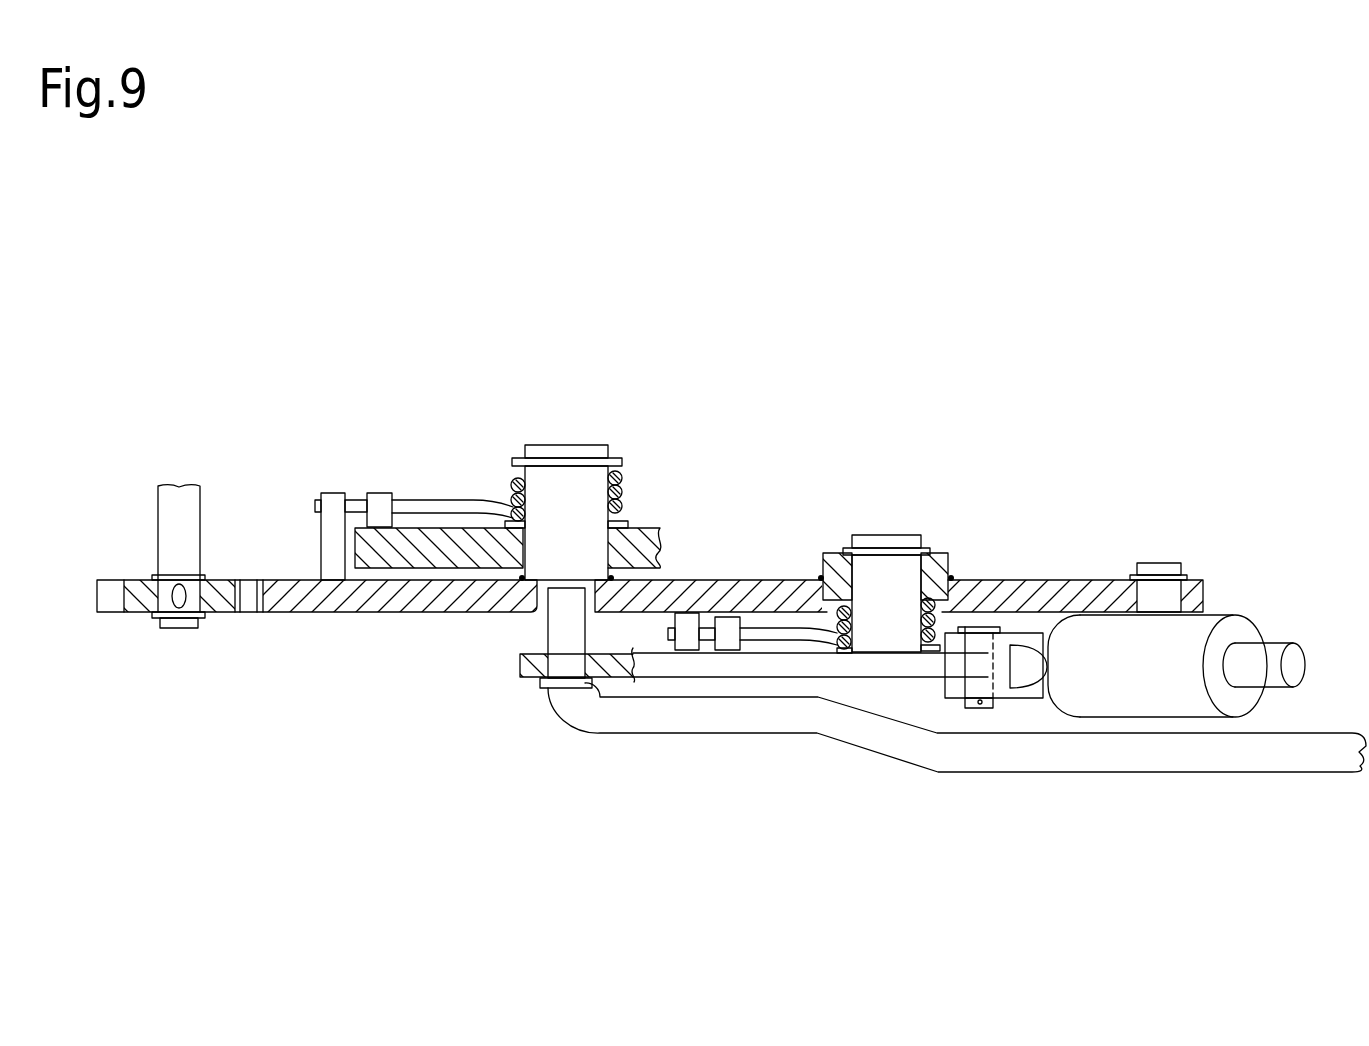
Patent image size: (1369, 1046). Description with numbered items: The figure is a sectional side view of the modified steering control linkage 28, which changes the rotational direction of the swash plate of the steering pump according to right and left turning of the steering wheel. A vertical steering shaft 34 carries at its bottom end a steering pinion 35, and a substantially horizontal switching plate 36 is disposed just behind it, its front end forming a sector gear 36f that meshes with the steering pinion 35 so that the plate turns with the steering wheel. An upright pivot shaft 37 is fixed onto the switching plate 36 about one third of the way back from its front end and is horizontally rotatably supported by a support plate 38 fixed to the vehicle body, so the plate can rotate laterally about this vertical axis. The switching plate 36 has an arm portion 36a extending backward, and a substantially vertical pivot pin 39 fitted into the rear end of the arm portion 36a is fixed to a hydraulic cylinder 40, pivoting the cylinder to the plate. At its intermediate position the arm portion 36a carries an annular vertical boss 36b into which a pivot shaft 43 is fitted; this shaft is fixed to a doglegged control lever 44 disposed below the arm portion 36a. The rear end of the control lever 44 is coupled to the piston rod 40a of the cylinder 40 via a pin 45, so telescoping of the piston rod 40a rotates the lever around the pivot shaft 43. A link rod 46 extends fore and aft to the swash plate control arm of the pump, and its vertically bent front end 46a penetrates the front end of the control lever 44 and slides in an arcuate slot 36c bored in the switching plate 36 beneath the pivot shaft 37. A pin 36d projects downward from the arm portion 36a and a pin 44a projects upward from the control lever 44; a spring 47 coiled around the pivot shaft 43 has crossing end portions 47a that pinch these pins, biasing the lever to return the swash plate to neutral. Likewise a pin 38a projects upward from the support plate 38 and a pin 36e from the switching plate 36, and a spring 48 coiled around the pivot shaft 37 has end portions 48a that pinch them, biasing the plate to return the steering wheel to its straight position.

The steering control linkage 28 is at (388, 283).
The steering shaft 34 is at (165, 503).
The steering pinion 35 is at (140, 614).
The switching plate 36 is at (300, 613).
The arm portion 36a is at (1028, 578).
The boss 36b is at (935, 568).
The arcuate slot 36c is at (545, 620).
The pin 36d is at (688, 642).
The pin 36e is at (332, 498).
The sector gear 36f is at (260, 578).
The pivot shaft 37 is at (565, 478).
The support plate 38 is at (400, 560).
The pin 38a is at (378, 491).
The pivot pin 39 is at (1155, 568).
The hydraulic cylinder 40 is at (1147, 695).
The piston rod 40a is at (1035, 678).
The pivot shaft 43 is at (888, 568).
The control lever 44 is at (808, 670).
The pin 44a is at (718, 613).
The pin 45 is at (980, 712).
The link rod 46 is at (1300, 765).
The front end 46a is at (547, 636).
The spring 47 is at (930, 660).
The end portions 47a is at (758, 632).
The spring 48 is at (623, 478).
The end portions 48a is at (412, 497).